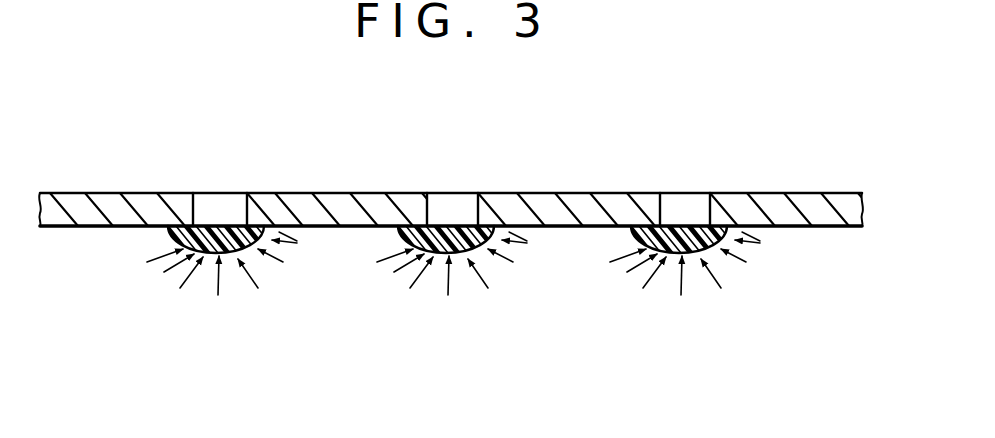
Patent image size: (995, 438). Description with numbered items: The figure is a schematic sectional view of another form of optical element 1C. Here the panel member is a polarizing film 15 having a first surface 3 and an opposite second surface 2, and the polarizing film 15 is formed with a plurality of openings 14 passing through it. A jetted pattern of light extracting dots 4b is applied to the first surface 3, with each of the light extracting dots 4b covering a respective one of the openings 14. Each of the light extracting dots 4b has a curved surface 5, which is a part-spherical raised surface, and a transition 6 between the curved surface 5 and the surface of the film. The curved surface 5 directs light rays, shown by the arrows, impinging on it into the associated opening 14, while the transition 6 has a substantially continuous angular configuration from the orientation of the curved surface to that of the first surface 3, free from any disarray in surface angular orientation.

The optical element 1C is at (95, 186).
The second surface 2 is at (792, 192).
The first surface 3 is at (822, 228).
The openings 14 is at (225, 207).
The polarizing film 15 is at (123, 207).
The light extracting dots 4b is at (172, 241).
The curved surface 5 is at (228, 258).
The transition 6 is at (280, 232).